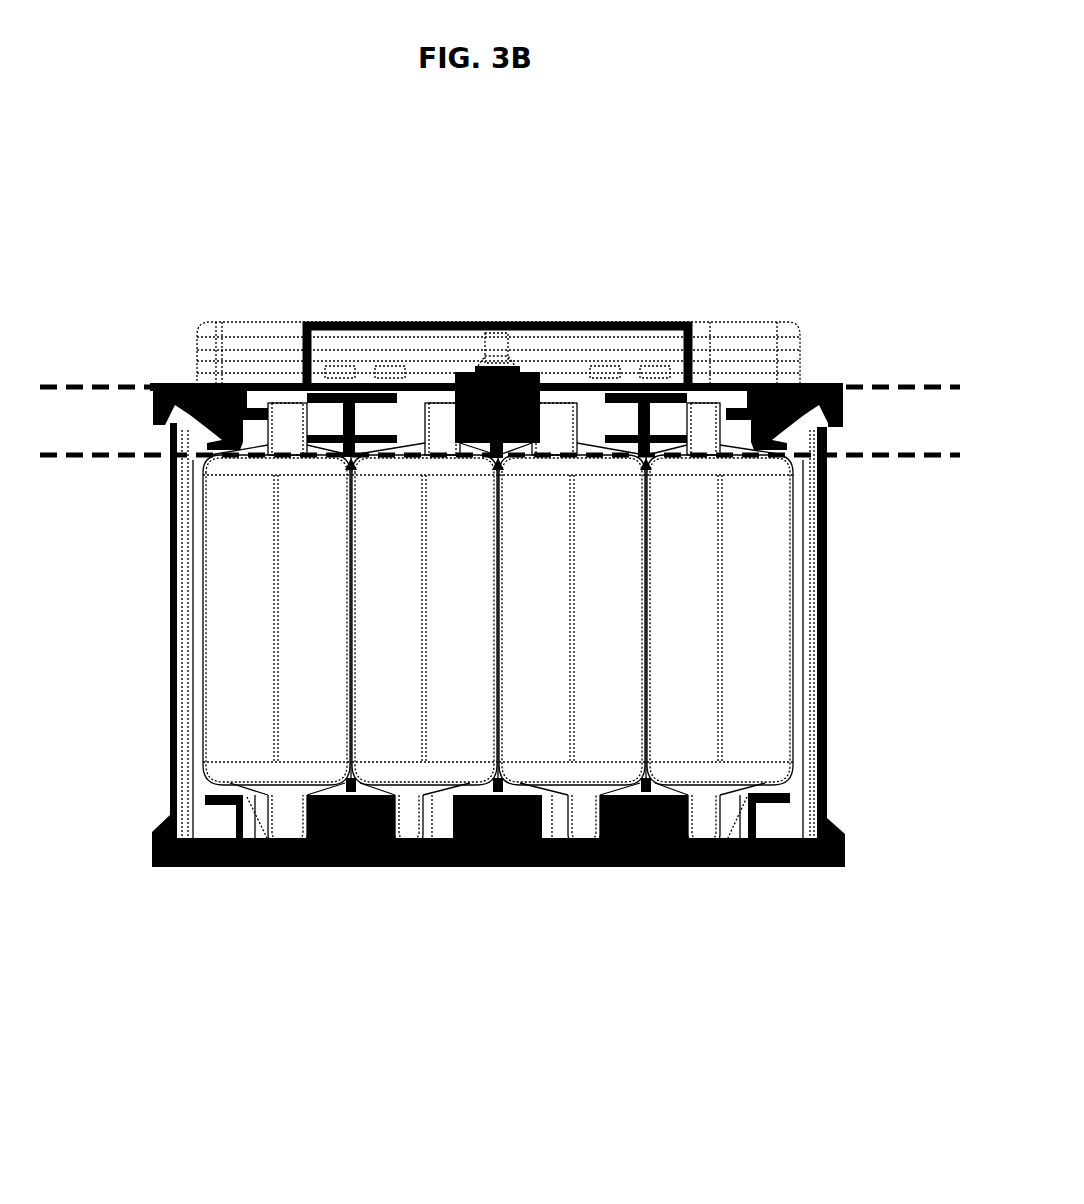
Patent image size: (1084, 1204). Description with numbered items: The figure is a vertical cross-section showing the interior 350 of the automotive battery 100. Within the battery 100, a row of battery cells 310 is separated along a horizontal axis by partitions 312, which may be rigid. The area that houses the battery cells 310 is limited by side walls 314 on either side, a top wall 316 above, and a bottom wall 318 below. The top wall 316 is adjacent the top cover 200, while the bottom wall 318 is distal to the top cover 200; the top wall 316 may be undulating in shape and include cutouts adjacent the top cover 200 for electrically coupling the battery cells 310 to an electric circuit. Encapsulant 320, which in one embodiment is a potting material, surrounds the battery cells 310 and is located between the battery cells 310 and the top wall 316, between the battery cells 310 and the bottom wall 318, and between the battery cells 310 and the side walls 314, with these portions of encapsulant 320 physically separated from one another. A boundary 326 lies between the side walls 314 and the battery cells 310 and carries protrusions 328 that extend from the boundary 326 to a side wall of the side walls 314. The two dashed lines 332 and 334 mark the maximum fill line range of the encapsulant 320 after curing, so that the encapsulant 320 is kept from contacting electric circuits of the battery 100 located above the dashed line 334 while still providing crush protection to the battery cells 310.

The automotive battery 100 is at (605, 213).
The interior 350 is at (772, 213).
The top cover 200 is at (205, 325).
The top wall 316 is at (310, 390).
The encapsulant 320 is at (290, 430).
The partitions 312 is at (352, 548).
The battery cells 310 is at (340, 633).
The side walls 314 is at (175, 680).
The dashed line 334 is at (95, 383).
The dashed line 332 is at (95, 457).
The bottom wall 318 is at (193, 862).
The boundary 326 is at (823, 865).
The protrusions 328 is at (790, 800).